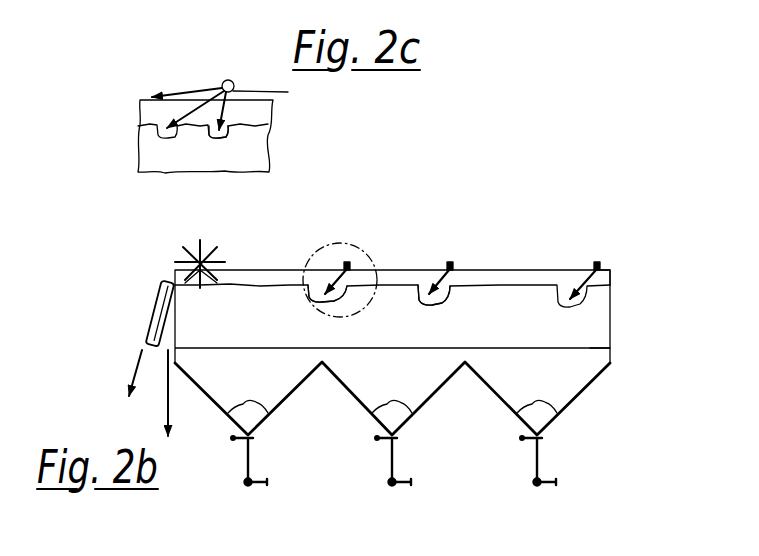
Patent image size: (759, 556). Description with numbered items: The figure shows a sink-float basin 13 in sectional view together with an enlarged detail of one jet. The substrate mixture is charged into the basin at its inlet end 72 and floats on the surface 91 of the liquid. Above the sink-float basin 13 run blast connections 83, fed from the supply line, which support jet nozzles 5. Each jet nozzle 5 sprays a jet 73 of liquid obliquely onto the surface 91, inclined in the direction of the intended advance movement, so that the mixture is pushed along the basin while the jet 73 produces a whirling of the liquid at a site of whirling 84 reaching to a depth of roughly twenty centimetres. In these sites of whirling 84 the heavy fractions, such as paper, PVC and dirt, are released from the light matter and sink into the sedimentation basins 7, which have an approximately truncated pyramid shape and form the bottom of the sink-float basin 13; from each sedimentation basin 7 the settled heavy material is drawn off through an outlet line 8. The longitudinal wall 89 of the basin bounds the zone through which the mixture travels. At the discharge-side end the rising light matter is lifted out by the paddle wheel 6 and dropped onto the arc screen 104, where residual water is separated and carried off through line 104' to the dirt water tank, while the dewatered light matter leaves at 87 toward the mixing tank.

In FIG. 2c, the jet nozzle 5 is at (224, 81).
In FIG. 2b, the paddle wheel 6 is at (185, 251).
In FIG. 2b, the sedimentation basin 7 is at (392, 412).
In FIG. 2b, the outlet line 8 is at (255, 484).
In FIG. 2b, the sink-float basin 13 is at (499, 268).
In FIG. 2b, the inlet end 72 is at (610, 269).
In FIG. 2c, the jet of liquid 73 is at (212, 94).
In FIG. 2b, the jet of liquid 73 is at (363, 300).
In FIG. 2c, the blast connection 83 is at (232, 81).
In FIG. 2b, the blast connection 83 is at (450, 262).
In FIG. 2c, the site of whirling 84 is at (221, 135).
In FIG. 2b, the site of whirling 84 is at (311, 300).
In FIG. 2b, the light matter passage 87 is at (133, 372).
In FIG. 2b, the longitudinal wall 89 is at (572, 338).
In FIG. 2c, the surface of the liquid 91 is at (197, 128).
In FIG. 2b, the surface of the liquid 91 is at (252, 286).
In FIG. 2b, the arc screen 104 is at (114, 313).
In FIG. 2b, the line 104' is at (201, 407).